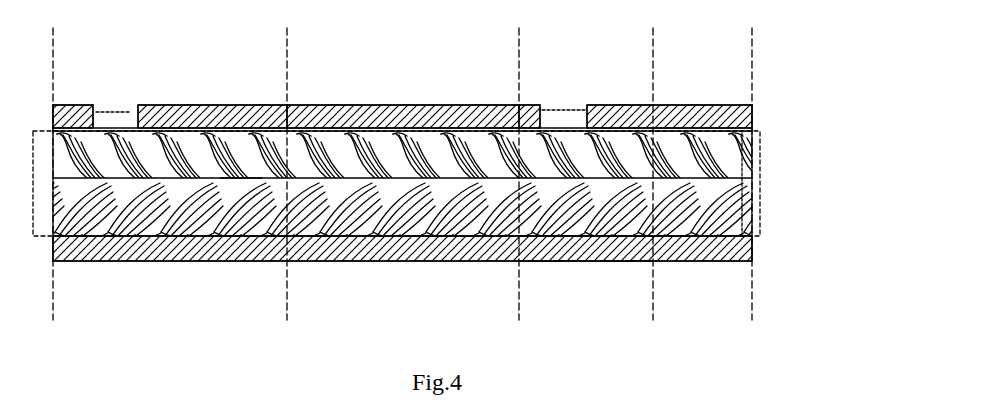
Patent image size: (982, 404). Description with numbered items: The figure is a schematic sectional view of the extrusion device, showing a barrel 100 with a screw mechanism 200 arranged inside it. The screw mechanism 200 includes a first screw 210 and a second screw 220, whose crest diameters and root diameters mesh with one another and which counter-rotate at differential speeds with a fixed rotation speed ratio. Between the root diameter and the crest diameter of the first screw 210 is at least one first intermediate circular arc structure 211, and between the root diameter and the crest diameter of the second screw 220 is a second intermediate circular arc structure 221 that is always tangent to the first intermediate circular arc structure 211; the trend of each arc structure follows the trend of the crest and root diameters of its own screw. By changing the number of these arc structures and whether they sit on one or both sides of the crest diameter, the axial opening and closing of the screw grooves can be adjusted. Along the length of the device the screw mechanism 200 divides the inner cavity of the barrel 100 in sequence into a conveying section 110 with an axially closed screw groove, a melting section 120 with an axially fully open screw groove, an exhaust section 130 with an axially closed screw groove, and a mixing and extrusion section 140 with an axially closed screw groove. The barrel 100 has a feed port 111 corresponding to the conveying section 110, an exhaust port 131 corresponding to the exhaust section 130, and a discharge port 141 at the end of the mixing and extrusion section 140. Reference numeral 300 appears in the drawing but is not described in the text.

The barrel 100 is at (735, 250).
The conveying section 110 is at (218, 128).
The feed port 111 is at (128, 112).
The melting section 120 is at (428, 126).
The exhaust section 130 is at (556, 262).
The exhaust port 131 is at (573, 118).
The mixing and extrusion section 140 is at (665, 122).
The discharge port 141 is at (735, 186).
The screw mechanism 200 is at (753, 122).
The first screw 210 is at (735, 170).
The first intermediate circular arc structure 211 is at (198, 133).
The second screw 220 is at (730, 210).
The second intermediate circular arc structure 221 is at (187, 232).
The bonding interface 300 is at (258, 238).